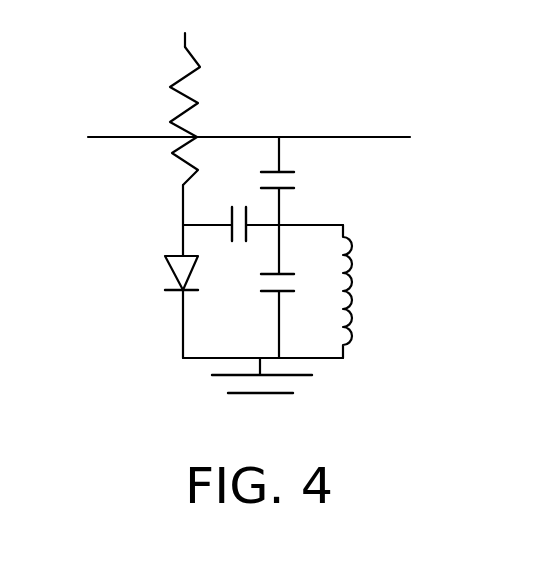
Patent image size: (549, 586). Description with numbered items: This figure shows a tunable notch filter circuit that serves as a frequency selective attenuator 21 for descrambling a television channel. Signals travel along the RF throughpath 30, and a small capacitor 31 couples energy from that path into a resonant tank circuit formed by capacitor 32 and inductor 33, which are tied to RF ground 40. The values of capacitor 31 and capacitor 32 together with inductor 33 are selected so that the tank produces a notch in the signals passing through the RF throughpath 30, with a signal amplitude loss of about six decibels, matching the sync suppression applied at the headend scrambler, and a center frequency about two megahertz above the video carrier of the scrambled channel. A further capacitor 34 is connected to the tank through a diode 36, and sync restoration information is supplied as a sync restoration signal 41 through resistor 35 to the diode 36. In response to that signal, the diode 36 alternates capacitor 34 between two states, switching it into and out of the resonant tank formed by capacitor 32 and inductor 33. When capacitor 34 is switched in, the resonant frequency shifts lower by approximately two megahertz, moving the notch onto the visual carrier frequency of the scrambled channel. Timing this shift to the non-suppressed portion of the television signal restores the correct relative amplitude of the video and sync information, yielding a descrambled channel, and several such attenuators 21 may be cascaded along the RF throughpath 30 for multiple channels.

The frequency selective attenuator 21 is at (153, 364).
The RF throughpath 30 is at (345, 137).
The capacitor 31 is at (292, 172).
The capacitor 32 is at (285, 272).
The inductor 33 is at (350, 337).
The capacitor 34 is at (232, 210).
The resistor 35 is at (190, 80).
The diode 36 is at (183, 255).
The RF ground 40 is at (270, 393).
The sync restoration signal 41 is at (185, 40).